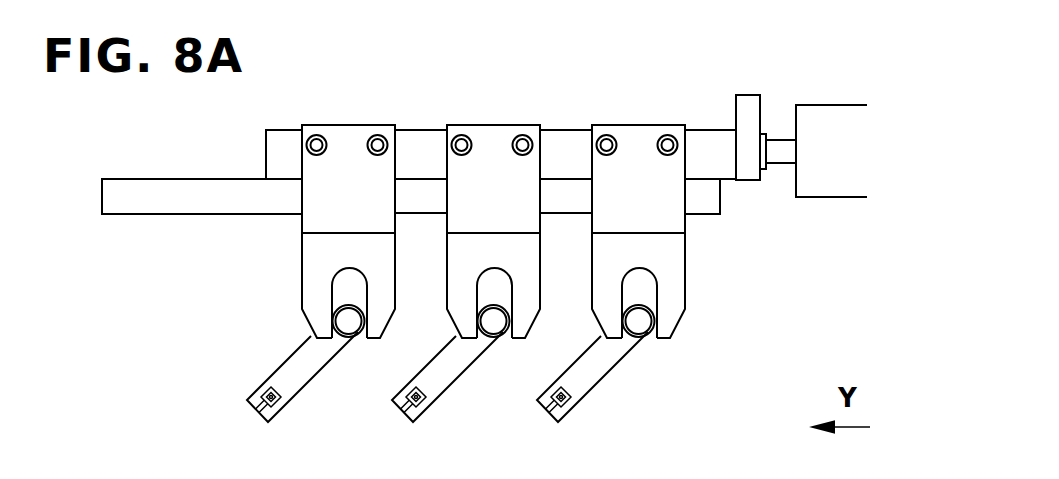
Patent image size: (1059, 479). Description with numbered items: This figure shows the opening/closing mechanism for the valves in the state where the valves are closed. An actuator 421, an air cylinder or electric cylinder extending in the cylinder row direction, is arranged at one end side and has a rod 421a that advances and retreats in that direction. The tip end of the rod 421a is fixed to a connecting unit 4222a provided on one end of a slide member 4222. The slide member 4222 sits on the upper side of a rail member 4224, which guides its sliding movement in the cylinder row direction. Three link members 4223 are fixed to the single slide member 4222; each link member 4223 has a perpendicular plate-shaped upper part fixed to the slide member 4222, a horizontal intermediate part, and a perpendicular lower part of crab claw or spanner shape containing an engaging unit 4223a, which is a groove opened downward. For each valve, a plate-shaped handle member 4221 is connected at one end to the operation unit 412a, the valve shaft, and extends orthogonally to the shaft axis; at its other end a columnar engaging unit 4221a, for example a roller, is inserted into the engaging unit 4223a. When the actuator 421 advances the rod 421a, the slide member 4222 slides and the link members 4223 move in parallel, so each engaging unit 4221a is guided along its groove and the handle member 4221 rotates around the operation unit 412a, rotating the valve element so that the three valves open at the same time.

The rail member 4224 is at (145, 213).
The slide member 4222 is at (278, 140).
The link member 4223 is at (516, 125).
The engaging unit 4223a is at (335, 286).
The engaging unit 4221a is at (348, 324).
The handle member 4221 is at (312, 384).
The operation unit 412a is at (268, 394).
The connecting unit 4222a is at (747, 183).
The rod 421a is at (782, 138).
The actuator 421 is at (832, 188).